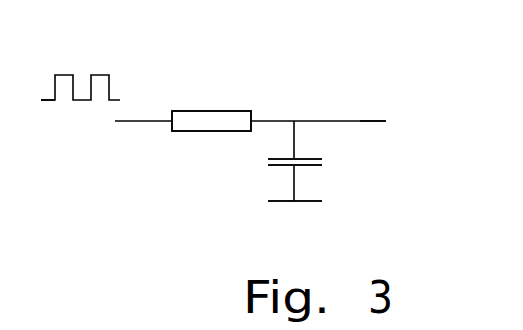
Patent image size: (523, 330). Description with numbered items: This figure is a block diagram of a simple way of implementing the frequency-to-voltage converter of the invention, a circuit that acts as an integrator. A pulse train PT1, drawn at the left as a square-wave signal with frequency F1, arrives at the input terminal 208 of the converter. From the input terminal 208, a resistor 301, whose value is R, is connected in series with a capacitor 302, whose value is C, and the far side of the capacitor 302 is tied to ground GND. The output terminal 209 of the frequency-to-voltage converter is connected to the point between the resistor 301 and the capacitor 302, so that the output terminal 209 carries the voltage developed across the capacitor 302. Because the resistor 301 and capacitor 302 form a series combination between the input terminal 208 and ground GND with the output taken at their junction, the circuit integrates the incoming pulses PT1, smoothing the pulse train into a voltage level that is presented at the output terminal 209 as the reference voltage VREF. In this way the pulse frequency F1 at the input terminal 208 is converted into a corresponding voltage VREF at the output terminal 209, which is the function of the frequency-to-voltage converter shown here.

The input terminal 208 is at (127, 123).
The output terminal 209 is at (354, 119).
The resistor 301 is at (215, 109).
The capacitor 302 is at (313, 159).
The pulse signal PT1 is at (98, 73).
The pulse frequency F1 is at (52, 105).
The resistance value R is at (188, 110).
The capacitance value C is at (300, 168).
The reference voltage VREF is at (377, 119).
The ground GND is at (292, 203).